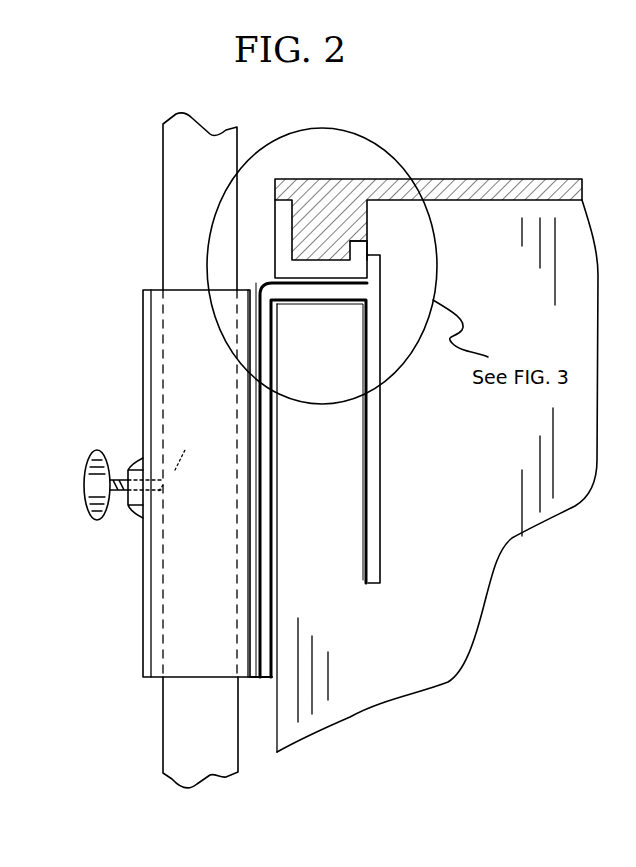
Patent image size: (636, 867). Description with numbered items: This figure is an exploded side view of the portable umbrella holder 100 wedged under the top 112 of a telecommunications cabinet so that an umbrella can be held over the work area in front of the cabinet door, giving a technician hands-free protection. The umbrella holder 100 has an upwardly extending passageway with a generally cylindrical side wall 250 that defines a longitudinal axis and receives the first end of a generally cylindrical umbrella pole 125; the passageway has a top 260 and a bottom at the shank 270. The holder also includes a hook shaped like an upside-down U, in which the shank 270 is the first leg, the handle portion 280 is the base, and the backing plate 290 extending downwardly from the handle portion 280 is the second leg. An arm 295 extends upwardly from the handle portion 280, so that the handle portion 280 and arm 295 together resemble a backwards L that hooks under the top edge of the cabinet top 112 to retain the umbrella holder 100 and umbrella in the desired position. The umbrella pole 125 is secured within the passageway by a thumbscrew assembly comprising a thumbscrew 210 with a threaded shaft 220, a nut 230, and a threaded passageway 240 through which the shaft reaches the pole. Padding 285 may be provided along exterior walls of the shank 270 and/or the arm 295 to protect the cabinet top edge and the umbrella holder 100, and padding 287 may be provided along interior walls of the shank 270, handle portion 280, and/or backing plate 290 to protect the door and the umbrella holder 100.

The umbrella holder 100 is at (126, 604).
The top 112 is at (433, 178).
The umbrella pole 125 is at (163, 697).
The thumbscrew 210 is at (87, 497).
The threaded shaft 220 is at (116, 468).
The nut 230 is at (130, 508).
The threaded passageway 240 is at (160, 488).
The cylindrical side wall 250 is at (142, 340).
The top 260 is at (156, 292).
The shank 270 is at (262, 680).
The handle portion 280 is at (303, 290).
The padding 285 is at (342, 298).
The padding 287 is at (360, 249).
The backing plate 290 is at (378, 317).
The arm 295 is at (374, 266).